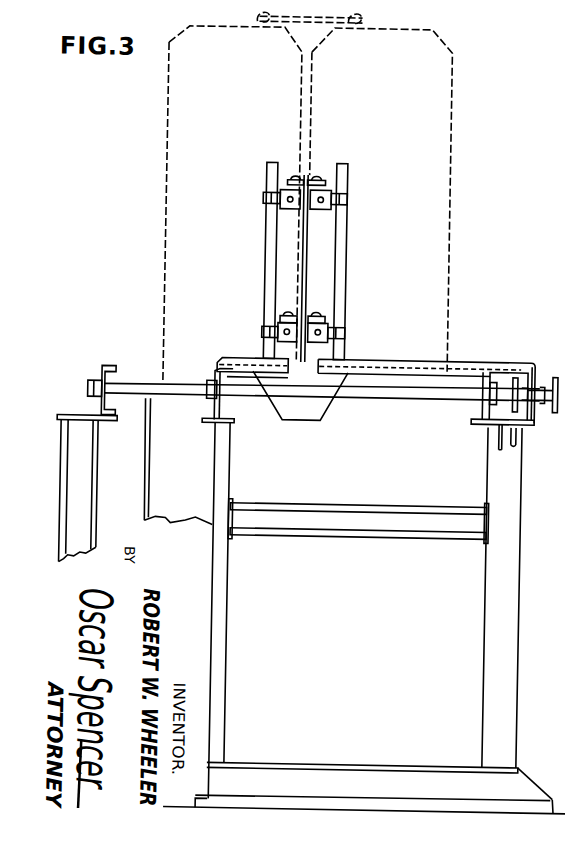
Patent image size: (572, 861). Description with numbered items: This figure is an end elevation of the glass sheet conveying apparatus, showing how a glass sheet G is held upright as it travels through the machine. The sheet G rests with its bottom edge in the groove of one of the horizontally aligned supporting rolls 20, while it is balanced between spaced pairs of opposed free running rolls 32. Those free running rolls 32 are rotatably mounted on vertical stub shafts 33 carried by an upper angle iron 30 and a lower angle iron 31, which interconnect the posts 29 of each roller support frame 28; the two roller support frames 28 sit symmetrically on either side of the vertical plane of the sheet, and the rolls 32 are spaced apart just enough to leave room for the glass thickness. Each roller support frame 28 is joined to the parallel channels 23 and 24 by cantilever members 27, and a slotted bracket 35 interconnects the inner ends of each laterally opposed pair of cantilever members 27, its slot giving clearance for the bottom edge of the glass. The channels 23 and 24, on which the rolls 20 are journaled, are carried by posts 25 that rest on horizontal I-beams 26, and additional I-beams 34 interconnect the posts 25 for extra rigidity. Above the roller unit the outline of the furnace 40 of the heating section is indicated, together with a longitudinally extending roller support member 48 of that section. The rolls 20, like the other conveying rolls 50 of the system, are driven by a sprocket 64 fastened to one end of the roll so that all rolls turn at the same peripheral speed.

The supporting rolls 20 is at (201, 396).
The parallel channel 23 is at (213, 372).
The parallel channel 24 is at (488, 367).
The posts 25 is at (218, 471).
The horizontal I-beams 26 is at (375, 768).
The cantilever members 27 is at (248, 351).
The roller support frames 28 is at (258, 200).
The posts 29 is at (332, 248).
The upper angle iron 30 is at (276, 209).
The lower angle iron 31 is at (274, 321).
The free running rolls 32 is at (285, 179).
The vertical stub shafts 33 is at (287, 186).
The I-beams 34 is at (359, 504).
The slotted bracket 35 is at (303, 421).
The furnace 40 is at (448, 140).
The roller support member 48 is at (101, 376).
The conveying rolls 50 is at (136, 388).
The sprockets 64 is at (518, 407).
The glass sheet G is at (304, 270).